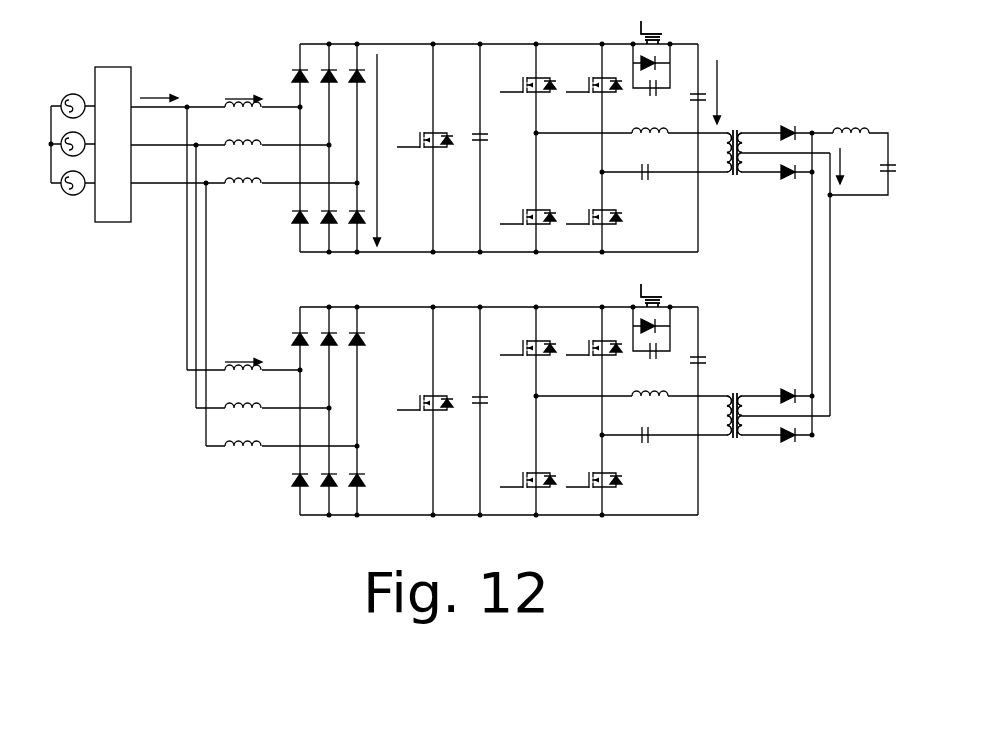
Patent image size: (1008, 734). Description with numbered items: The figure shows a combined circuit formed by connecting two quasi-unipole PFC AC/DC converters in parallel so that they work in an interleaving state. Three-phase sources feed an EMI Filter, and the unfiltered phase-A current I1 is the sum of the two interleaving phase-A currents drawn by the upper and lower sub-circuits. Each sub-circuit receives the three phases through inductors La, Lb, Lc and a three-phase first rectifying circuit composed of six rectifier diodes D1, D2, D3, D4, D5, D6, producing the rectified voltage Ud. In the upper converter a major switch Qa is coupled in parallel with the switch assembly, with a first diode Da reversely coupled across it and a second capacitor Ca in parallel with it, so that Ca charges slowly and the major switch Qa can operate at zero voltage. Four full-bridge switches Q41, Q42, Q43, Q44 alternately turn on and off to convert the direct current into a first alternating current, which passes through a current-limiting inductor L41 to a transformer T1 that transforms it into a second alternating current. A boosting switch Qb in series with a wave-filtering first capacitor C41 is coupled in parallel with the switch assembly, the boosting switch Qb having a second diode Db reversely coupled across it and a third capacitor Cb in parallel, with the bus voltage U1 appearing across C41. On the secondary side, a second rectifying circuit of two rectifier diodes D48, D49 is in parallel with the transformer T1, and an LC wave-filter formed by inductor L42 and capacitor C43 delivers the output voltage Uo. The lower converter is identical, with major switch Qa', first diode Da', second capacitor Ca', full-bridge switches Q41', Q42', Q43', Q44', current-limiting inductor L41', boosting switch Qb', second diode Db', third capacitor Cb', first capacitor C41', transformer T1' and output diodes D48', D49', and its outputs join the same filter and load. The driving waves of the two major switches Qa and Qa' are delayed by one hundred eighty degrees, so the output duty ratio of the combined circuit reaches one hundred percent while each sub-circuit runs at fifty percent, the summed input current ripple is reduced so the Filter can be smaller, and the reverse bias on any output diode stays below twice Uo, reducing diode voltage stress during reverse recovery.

The EMI filter Filter is at (113, 144).
The phase-A current I1 is at (159, 90).
The phase a inductor La is at (243, 246).
The phase b inductor Lb is at (243, 284).
The phase c inductor Lc is at (243, 322).
The rectifier diode D1 is at (295, 198).
The rectifier diode D2 is at (324, 198).
The rectifier diode D3 is at (352, 198).
The rectifier diode D4 is at (295, 340).
The rectifier diode D5 is at (324, 340).
The rectifier diode D6 is at (352, 340).
The voltage of the major switch Ud is at (389, 150).
The major switch Qa is at (415, 140).
The first switch device Da is at (445, 131).
The second capacitor Ca is at (489, 128).
The full-bridge switch Q41 is at (527, 85).
The full-bridge switch Q42 is at (593, 85).
The full-bridge switch Q43 is at (593, 217).
The full-bridge switch Q44 is at (527, 217).
The current-limiting inductor L41 is at (650, 122).
The boosting switch Qb is at (654, 29).
The second switch device Db is at (668, 62).
The third capacitor Cb is at (663, 93).
The first capacitor C41 is at (691, 84).
The bus voltage U1 is at (730, 92).
The transformer T1 is at (736, 146).
The rectifier diode D48 is at (789, 124).
The rectifier diode D49 is at (789, 183).
The inductor L42 is at (850, 124).
The output voltage Uo is at (853, 166).
The capacitor C43 is at (906, 155).
The major switch Qa' is at (414, 403).
The first switch device Da' is at (452, 393).
The second capacitor Ca' is at (491, 390).
The full-bridge switch Q41' is at (527, 348).
The full-bridge switch Q42' is at (593, 348).
The full-bridge switch Q43' is at (593, 480).
The full-bridge switch Q44' is at (527, 480).
The current-limiting inductor L41' is at (650, 385).
The boosting switch Qb' is at (656, 292).
The second switch device Db' is at (670, 325).
The third capacitor Cb' is at (665, 356).
The first capacitor C41' is at (691, 347).
The transformer T1' is at (738, 409).
The rectifier diode D48' is at (791, 387).
The rectifier diode D49' is at (791, 446).